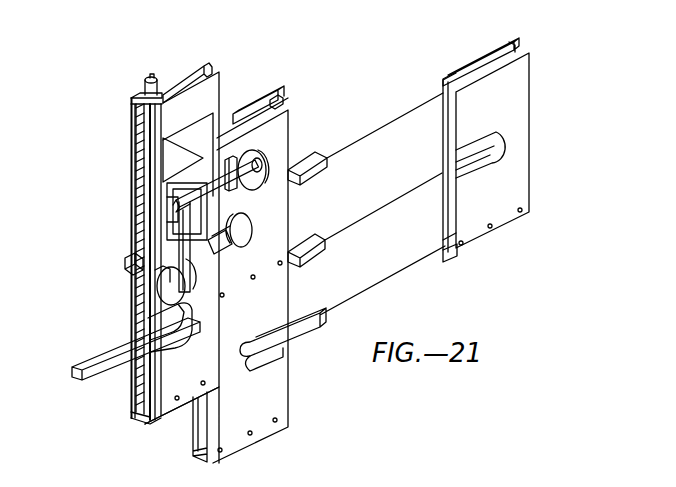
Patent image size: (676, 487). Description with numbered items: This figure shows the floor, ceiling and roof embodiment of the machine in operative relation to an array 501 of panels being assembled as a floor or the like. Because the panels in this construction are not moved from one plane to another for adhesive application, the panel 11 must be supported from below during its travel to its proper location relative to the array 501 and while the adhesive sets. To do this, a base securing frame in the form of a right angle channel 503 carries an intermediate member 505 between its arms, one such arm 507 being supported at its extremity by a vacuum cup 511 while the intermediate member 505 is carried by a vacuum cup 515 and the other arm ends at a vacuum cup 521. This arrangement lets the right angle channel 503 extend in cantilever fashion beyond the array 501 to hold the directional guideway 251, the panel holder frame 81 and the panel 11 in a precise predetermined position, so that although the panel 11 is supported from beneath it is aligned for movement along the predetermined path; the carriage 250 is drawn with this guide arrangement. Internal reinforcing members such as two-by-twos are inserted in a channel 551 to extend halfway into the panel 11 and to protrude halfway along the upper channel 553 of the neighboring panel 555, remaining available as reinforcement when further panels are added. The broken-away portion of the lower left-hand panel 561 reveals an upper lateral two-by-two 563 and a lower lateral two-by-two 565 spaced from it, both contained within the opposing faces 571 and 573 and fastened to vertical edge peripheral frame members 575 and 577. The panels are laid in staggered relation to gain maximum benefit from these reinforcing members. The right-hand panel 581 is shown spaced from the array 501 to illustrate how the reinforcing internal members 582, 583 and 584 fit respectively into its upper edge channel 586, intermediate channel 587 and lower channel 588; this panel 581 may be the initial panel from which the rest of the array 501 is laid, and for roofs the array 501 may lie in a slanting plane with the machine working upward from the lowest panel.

The panel 11 is at (216, 80).
The panel holder frame 81 is at (176, 134).
The opposing face 571 is at (133, 124).
The channel 551 is at (134, 178).
The directional guideway 251 is at (170, 202).
The carriage 250 is at (181, 208).
The upper lateral 2x2 563 is at (127, 261).
The vertical edge peripheral frame member 575 is at (137, 283).
The arm 507 is at (181, 278).
The opposing face 573 is at (128, 311).
The lower lateral 2x2 565 is at (128, 366).
The vertical edge peripheral frame member 577 is at (136, 392).
The lower left-hand panel 561 is at (163, 406).
The vacuum cup 521 is at (196, 302).
The vacuum cup 515 is at (230, 247).
The intermediate member 505 is at (222, 226).
The right angle channel 503 is at (289, 215).
The vacuum cup 511 is at (262, 160).
The upper channel 553 is at (279, 101).
The panel 555 is at (238, 112).
The reinforcing internal member 582 is at (328, 157).
The reinforcing internal member 583 is at (326, 241).
The reinforcing internal member 584 is at (312, 326).
The array 501 is at (268, 369).
The upper edge channel 586 is at (512, 50).
The right-hand panel 581 is at (517, 85).
The intermediate channel 587 is at (446, 172).
The lower channel 588 is at (444, 254).